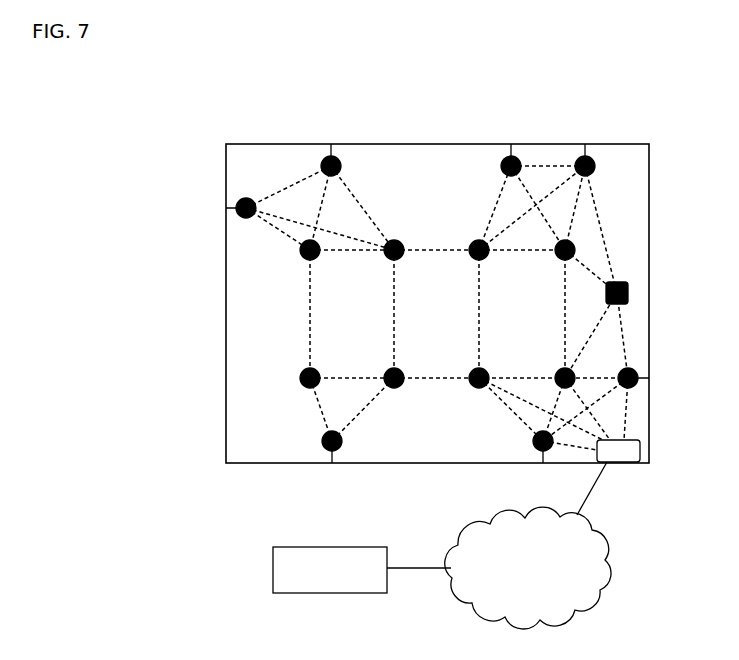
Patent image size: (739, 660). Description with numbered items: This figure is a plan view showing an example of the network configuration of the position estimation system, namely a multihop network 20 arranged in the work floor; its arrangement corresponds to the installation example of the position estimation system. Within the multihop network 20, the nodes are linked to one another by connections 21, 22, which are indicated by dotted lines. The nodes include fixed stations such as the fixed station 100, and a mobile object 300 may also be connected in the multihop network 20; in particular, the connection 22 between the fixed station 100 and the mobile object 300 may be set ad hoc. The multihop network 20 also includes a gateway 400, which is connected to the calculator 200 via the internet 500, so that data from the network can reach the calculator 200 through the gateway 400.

The multihop network 20 is at (419, 144).
The connection 21 is at (548, 144).
The connection 22 is at (599, 217).
The fixed station 100 is at (594, 168).
The mobile object 300 is at (629, 290).
The gateway 400 is at (640, 441).
The calculator 200 is at (388, 551).
The internet 500 is at (600, 532).